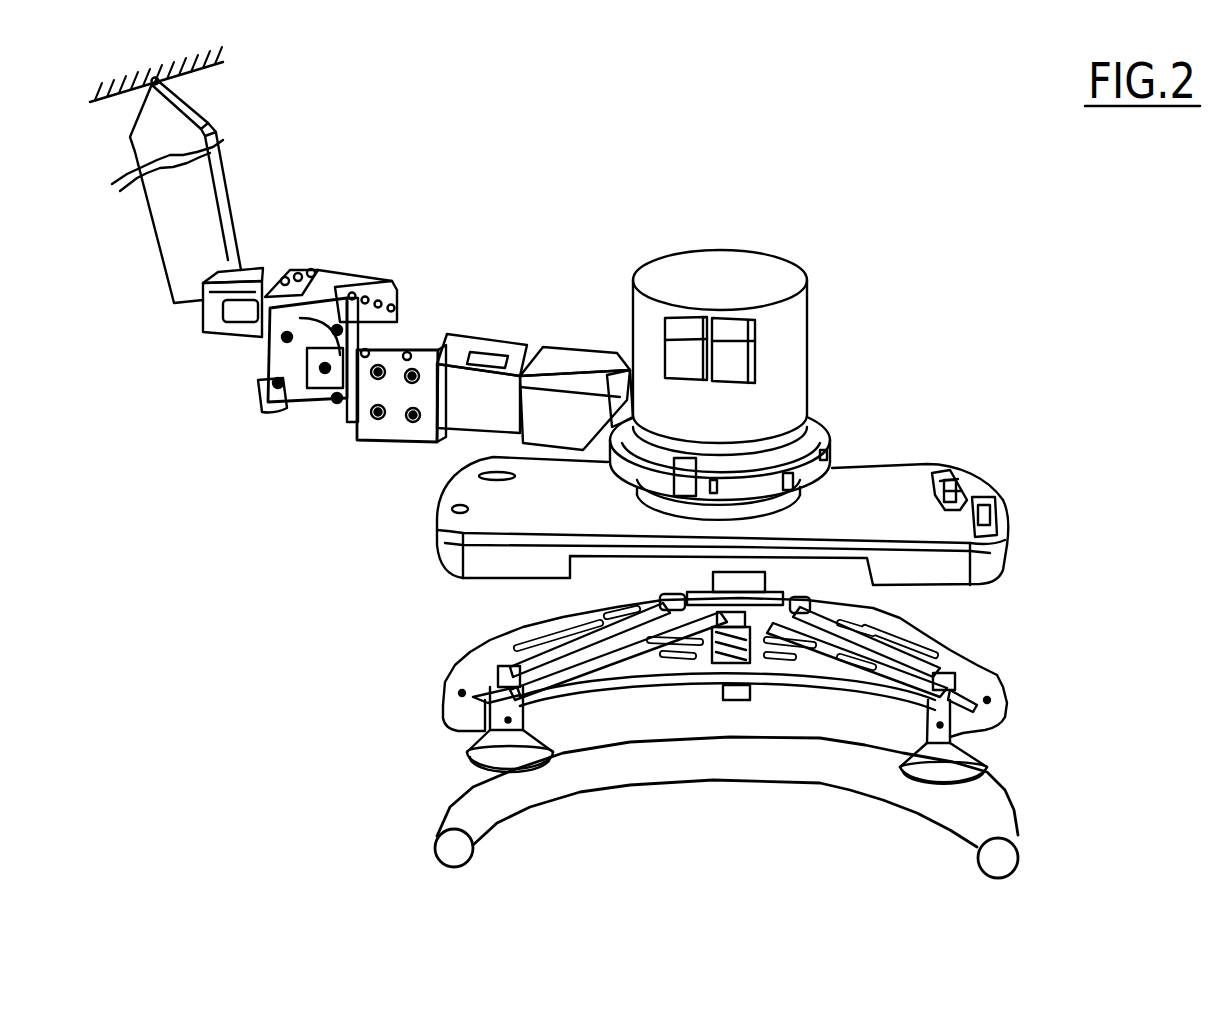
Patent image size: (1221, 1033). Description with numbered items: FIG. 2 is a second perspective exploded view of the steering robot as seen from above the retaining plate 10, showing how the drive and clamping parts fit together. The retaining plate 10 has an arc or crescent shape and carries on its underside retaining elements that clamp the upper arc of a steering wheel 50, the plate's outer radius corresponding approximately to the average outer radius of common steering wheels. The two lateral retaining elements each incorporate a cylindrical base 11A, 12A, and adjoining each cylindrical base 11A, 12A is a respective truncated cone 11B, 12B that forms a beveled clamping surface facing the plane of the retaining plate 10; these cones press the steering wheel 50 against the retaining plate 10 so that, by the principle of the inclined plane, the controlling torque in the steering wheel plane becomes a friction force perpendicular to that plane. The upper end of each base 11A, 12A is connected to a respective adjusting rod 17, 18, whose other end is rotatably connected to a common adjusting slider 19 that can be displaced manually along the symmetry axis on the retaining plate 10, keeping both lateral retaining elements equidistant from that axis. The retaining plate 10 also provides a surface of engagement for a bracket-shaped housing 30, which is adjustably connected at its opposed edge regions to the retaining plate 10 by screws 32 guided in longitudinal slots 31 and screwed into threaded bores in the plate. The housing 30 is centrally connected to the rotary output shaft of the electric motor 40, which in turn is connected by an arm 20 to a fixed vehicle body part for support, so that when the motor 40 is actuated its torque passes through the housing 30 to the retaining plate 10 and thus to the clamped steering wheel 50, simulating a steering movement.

The retaining plate 10 is at (433, 686).
The cylindrical base 11A is at (488, 733).
The truncated cone 11B is at (538, 786).
The cylindrical base 12A is at (950, 725).
The truncated cone 12B is at (985, 768).
The adjusting rod 17 is at (611, 647).
The adjusting rod 18 is at (887, 668).
The adjusting slider 19 is at (777, 593).
The arm 20 is at (498, 332).
The housing 30 is at (934, 458).
The longitudinal slot 31 is at (960, 490).
The screw 32 is at (967, 490).
The electric motor 40 is at (820, 338).
The steering wheel 50 is at (775, 760).